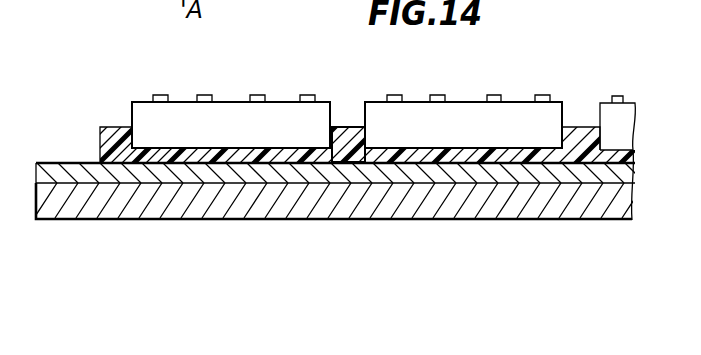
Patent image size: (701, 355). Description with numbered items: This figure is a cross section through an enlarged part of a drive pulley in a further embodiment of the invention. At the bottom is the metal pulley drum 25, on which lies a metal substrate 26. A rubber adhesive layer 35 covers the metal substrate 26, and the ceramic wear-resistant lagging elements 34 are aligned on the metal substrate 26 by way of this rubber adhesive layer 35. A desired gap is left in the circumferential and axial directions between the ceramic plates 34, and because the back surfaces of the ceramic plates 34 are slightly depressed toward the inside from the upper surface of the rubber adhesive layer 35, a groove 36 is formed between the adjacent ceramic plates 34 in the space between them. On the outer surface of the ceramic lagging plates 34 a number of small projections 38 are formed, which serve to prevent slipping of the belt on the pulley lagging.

The metal pulley drum 25 is at (210, 198).
The metal substrate 26 is at (330, 172).
The wear-resistant lagging elements 34 is at (232, 115).
The rubber adhesive layer 35 is at (427, 157).
The groove 36 is at (347, 115).
The small projection 38 is at (156, 95).